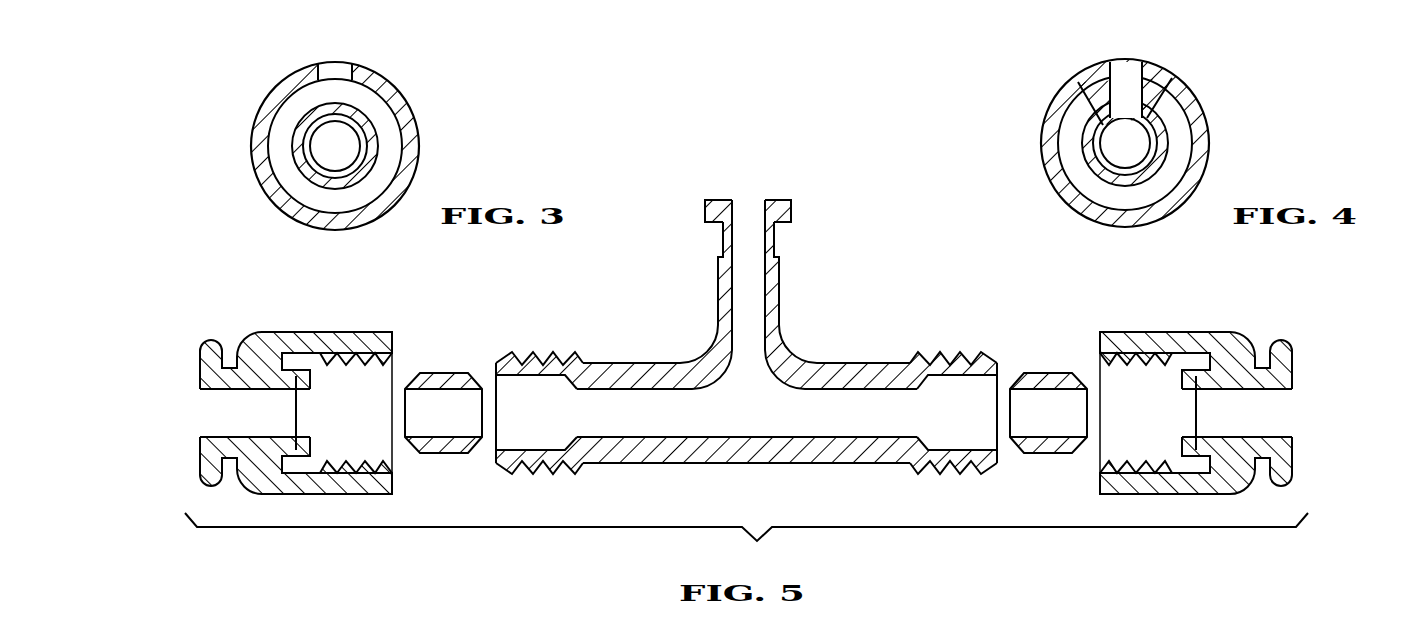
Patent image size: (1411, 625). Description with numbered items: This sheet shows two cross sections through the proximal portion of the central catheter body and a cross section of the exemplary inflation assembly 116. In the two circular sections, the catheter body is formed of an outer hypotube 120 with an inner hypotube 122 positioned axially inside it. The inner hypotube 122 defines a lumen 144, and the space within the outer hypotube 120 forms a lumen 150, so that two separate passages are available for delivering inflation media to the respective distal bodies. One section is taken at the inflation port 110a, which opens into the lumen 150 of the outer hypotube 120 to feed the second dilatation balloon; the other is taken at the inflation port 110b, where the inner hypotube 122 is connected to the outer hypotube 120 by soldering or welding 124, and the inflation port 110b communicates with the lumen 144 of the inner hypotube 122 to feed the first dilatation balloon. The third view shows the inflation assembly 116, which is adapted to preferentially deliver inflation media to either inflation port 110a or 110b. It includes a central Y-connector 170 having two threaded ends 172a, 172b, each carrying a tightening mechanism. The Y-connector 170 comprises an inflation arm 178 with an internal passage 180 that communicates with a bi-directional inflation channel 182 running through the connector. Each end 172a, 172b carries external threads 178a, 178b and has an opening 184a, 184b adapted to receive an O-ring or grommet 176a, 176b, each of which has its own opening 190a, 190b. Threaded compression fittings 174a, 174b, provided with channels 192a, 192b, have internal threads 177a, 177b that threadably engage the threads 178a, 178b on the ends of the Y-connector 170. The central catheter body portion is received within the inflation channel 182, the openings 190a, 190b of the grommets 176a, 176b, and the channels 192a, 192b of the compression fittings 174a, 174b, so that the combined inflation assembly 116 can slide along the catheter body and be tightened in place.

In FIG. 3, the inflation port 110a is at (337, 139).
In FIG. 4, the inflation port 110b is at (1126, 125).
In FIG. 3, the outer hypotube 120 is at (405, 120).
In FIG. 4, the outer hypotube 120 is at (1057, 108).
In FIG. 3, the inner hypotube 122 is at (298, 152).
In FIG. 4, the inner hypotube 122 is at (1092, 165).
In FIG. 4, the soldering or welding 124 is at (1165, 78).
In FIG. 3, the lumen of inner hypotube 144 is at (330, 138).
In FIG. 4, the lumen of inner hypotube 144 is at (1115, 148).
In FIG. 3, the lumen of outer hypotube 150 is at (305, 198).
In FIG. 4, the lumen of outer hypotube 150 is at (1180, 145).
In FIG. 5, the inflation assembly 116 is at (744, 336).
In FIG. 5, the Y-connector 170 is at (744, 336).
In FIG. 5, the threaded end 172a is at (611, 412).
In FIG. 5, the threaded end 172b is at (879, 412).
In FIG. 5, the threaded compression fitting 174a is at (280, 392).
In FIG. 5, the threaded compression fitting 174b is at (1230, 387).
In FIG. 5, the O-ring or grommet 176a is at (450, 411).
In FIG. 5, the O-ring or grommet 176b is at (1044, 411).
In FIG. 5, the internal threads 177a is at (343, 354).
In FIG. 5, the internal threads 177b is at (1133, 352).
In FIG. 5, the inflation arm 178 is at (758, 275).
In FIG. 5, the threads 178a is at (572, 464).
In FIG. 5, the threads 178b is at (933, 471).
In FIG. 5, the internal passage 180 is at (745, 216).
In FIG. 5, the bi-directional inflation channel 182 is at (825, 426).
In FIG. 5, the opening 184a is at (545, 444).
In FIG. 5, the opening 184b is at (957, 438).
In FIG. 5, the opening 190a is at (452, 430).
In FIG. 5, the opening 190b is at (1043, 428).
In FIG. 5, the channel 192a is at (230, 391).
In FIG. 5, the channel 192b is at (1263, 388).